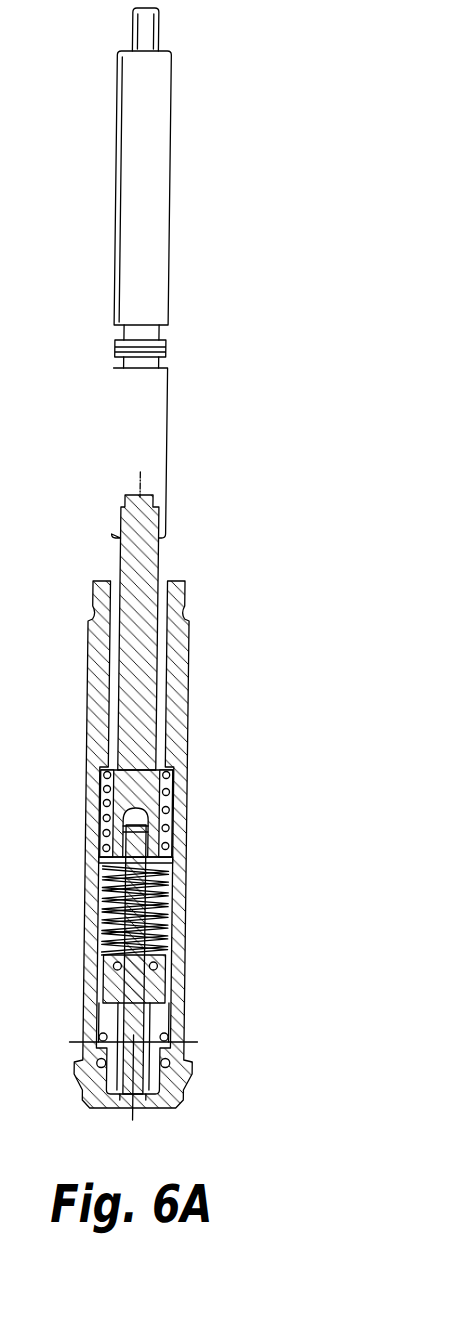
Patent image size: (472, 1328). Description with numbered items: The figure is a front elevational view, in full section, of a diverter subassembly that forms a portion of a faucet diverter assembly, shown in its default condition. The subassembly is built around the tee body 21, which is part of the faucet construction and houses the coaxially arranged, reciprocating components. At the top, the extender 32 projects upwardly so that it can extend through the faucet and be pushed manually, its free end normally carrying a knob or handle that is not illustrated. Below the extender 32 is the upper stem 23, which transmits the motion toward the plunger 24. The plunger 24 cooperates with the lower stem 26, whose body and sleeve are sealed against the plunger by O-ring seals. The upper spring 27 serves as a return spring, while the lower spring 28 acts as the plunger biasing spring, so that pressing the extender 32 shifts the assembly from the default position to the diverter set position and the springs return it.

The tee body 21 is at (186, 728).
The upper stem 23 is at (152, 573).
The plunger 24 is at (179, 1028).
The lower stem 26 is at (167, 992).
The upper spring 27 is at (181, 799).
The lower spring 28 is at (179, 913).
The extender 32 is at (158, 403).